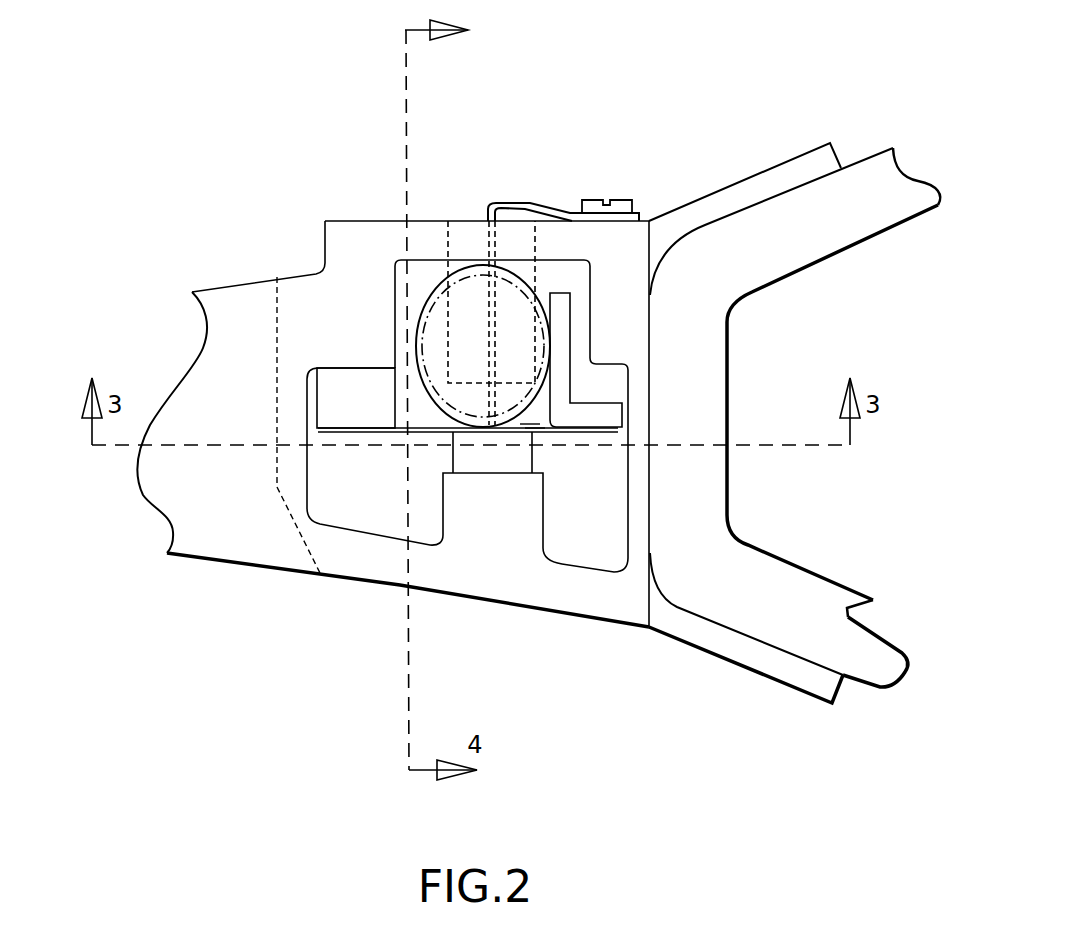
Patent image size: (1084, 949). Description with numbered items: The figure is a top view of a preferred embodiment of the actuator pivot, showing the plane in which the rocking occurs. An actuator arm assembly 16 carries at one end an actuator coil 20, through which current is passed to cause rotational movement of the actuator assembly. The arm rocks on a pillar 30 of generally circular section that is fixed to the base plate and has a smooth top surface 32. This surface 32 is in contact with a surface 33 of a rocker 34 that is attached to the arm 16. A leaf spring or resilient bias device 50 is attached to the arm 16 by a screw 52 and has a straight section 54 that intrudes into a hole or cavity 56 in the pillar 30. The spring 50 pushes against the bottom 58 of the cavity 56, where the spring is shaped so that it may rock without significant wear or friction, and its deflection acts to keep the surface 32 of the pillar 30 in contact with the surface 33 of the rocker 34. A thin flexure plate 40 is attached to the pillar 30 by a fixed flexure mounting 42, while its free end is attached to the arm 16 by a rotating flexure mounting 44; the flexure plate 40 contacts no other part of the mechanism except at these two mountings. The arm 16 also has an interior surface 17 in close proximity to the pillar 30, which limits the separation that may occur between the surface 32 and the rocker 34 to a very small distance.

The actuator arm assembly 16 is at (312, 300).
The interior surface 17 is at (490, 272).
The actuator coil 20 is at (852, 205).
The pillar 30 is at (433, 370).
The smooth surface 32 is at (527, 422).
The rocker surface 33 is at (533, 425).
The rocker 34 is at (488, 460).
The flexure plate 40 is at (423, 432).
The fixed flexure mounting 42 is at (565, 353).
The rotating flexure mounting 44 is at (343, 415).
The leaf spring 50 is at (527, 202).
The screw 52 is at (608, 200).
The straight section 54 is at (490, 345).
The cavity 56 is at (450, 340).
The cavity bottom 58 is at (490, 408).